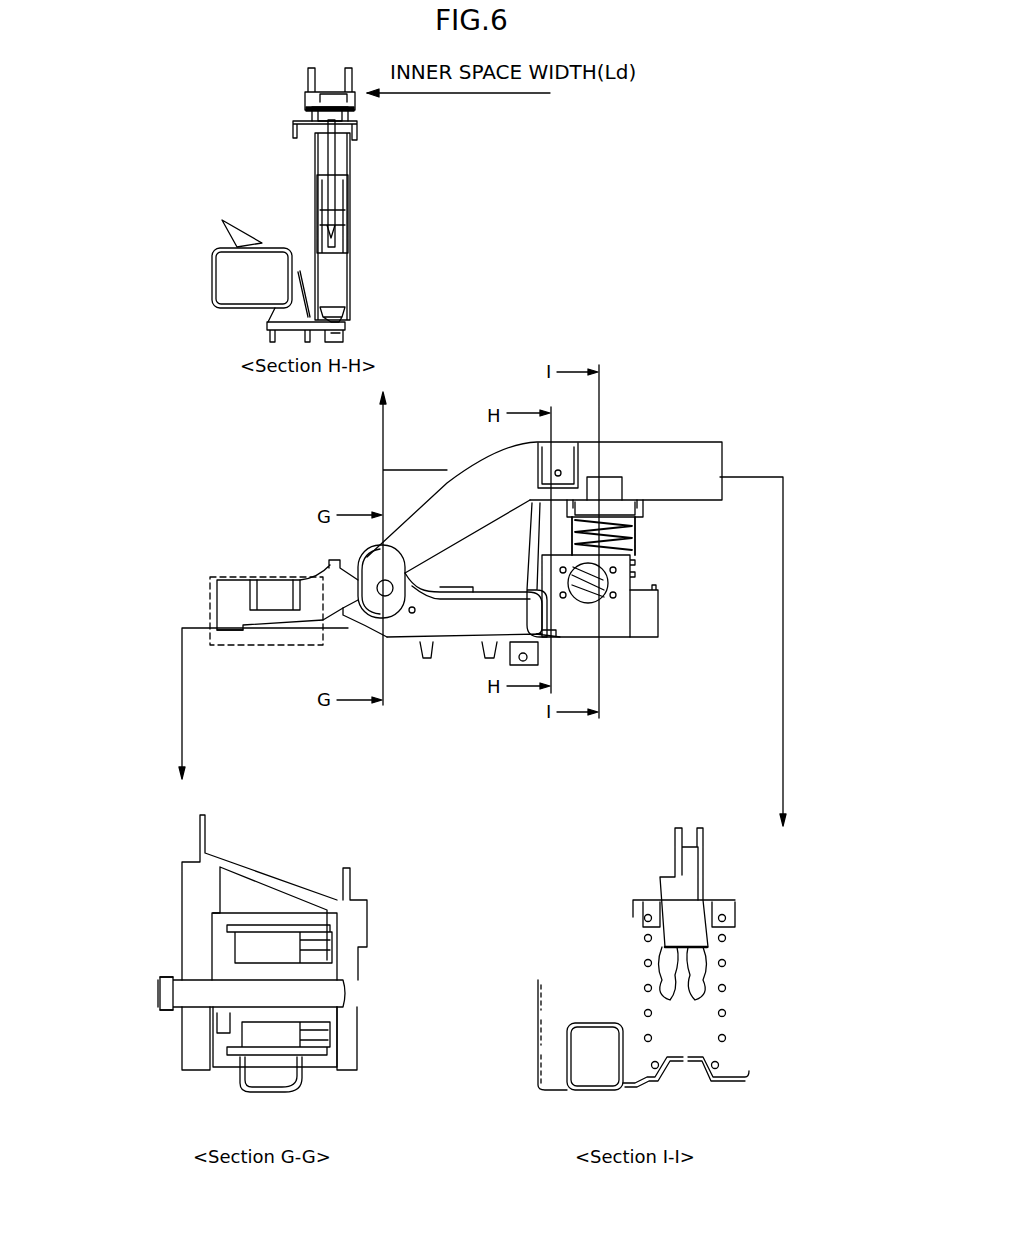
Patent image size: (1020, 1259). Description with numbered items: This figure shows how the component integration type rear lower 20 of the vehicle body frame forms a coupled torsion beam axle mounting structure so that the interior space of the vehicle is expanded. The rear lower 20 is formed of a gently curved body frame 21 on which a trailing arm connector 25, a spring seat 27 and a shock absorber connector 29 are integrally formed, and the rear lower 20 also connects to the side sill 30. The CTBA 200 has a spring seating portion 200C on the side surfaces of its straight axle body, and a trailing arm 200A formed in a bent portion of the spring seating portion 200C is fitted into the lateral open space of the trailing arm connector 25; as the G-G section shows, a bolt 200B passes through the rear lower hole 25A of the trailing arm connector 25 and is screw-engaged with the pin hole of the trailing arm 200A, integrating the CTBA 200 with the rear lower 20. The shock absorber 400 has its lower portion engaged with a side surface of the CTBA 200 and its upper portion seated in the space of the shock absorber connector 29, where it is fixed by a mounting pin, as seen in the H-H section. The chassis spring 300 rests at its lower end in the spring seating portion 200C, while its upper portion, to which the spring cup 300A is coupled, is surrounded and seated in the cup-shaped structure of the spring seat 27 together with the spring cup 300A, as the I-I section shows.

The rear lower 20 is at (437, 503).
The body frame 21 is at (307, 75).
The trailing arm connector 25 is at (370, 577).
The rear lower hole 25A is at (193, 977).
The spring seat 27 is at (623, 503).
The shock absorber connector 29 is at (353, 112).
The side sill 30 is at (247, 573).
The CTBA 200 is at (232, 283).
The trailing arm 200A is at (288, 1030).
The bolt 200B is at (333, 987).
The spring seating portion 200C is at (647, 617).
The chassis spring 300 is at (636, 533).
The spring cup 300A is at (647, 927).
The shock absorber 400 is at (351, 163).